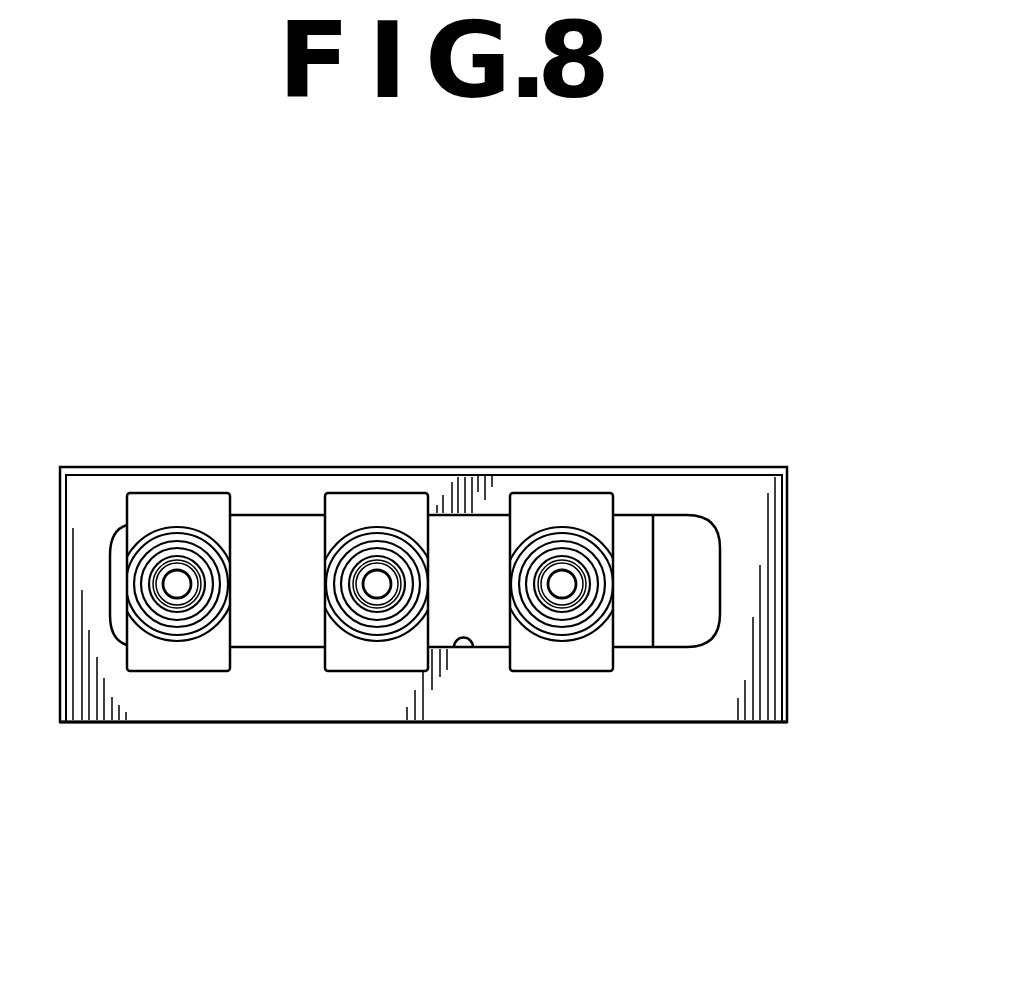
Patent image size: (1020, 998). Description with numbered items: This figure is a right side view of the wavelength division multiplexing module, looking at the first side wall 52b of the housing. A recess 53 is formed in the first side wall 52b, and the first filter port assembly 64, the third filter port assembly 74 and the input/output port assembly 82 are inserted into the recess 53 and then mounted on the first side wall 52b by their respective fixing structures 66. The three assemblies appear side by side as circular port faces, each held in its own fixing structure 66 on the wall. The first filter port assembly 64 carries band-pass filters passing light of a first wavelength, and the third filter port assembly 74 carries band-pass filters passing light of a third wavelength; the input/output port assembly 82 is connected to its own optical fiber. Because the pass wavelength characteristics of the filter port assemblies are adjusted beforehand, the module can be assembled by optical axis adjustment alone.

The first side wall 52b is at (770, 576).
The recess 53 is at (470, 648).
The first filter port assembly 64 is at (179, 520).
The fixing structures 66 is at (160, 660).
The third filter port assembly 74 is at (378, 520).
The input/output port assembly 82 is at (568, 520).